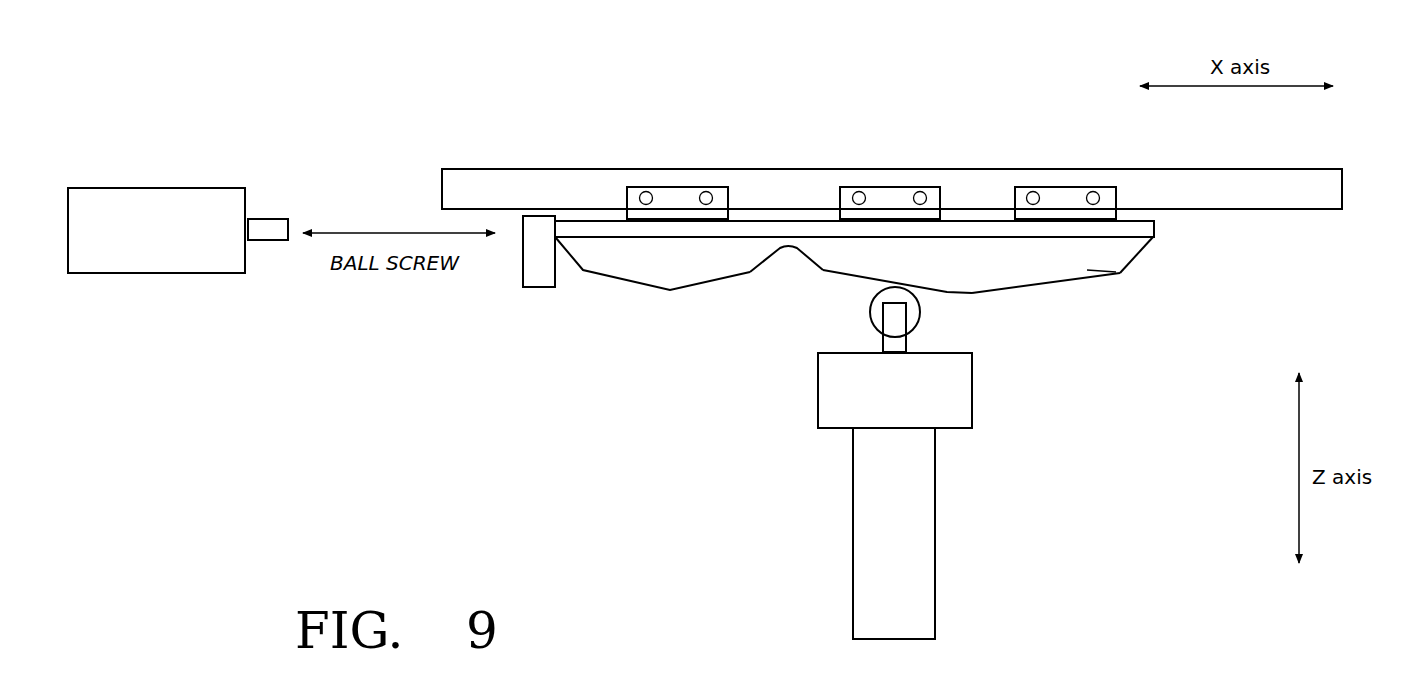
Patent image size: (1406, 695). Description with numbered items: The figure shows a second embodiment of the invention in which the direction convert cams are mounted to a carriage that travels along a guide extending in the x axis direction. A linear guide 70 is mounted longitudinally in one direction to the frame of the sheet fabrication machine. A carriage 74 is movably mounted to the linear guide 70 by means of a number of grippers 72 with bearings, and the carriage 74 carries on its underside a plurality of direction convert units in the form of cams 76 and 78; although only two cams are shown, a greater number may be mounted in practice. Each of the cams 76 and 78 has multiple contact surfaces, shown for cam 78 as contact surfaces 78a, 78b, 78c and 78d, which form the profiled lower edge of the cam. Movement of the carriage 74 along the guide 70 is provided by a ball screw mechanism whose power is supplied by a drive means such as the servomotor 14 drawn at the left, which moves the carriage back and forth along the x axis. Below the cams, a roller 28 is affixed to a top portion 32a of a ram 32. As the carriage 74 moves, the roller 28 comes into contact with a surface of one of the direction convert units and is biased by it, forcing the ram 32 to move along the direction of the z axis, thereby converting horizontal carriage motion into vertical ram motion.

The servomotor 14 is at (155, 188).
The roller 28 is at (870, 310).
The ram 32 is at (930, 522).
The top portion 32a is at (822, 400).
The linear guide 70 is at (578, 169).
The grippers 72 is at (884, 195).
The carriage 74 is at (1155, 226).
The cam 76 is at (878, 280).
The cam 78 is at (894, 291).
The contact surface 78a is at (808, 263).
The contact surface 78b is at (945, 293).
The contact surface 78c is at (1058, 282).
The contact surface 78d is at (1137, 260).